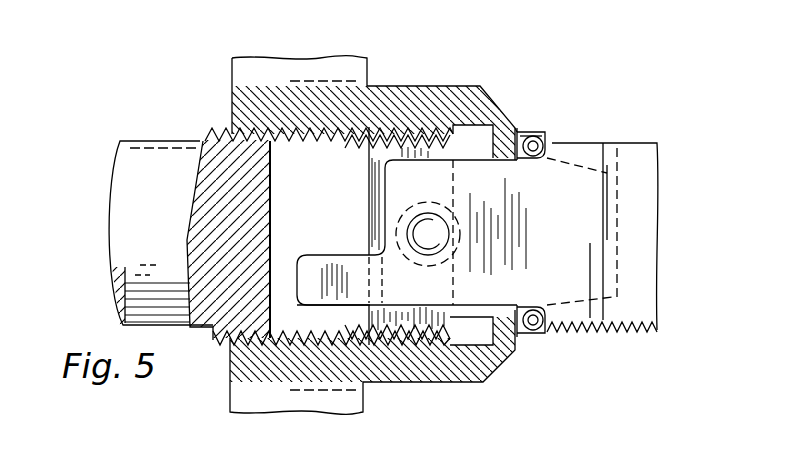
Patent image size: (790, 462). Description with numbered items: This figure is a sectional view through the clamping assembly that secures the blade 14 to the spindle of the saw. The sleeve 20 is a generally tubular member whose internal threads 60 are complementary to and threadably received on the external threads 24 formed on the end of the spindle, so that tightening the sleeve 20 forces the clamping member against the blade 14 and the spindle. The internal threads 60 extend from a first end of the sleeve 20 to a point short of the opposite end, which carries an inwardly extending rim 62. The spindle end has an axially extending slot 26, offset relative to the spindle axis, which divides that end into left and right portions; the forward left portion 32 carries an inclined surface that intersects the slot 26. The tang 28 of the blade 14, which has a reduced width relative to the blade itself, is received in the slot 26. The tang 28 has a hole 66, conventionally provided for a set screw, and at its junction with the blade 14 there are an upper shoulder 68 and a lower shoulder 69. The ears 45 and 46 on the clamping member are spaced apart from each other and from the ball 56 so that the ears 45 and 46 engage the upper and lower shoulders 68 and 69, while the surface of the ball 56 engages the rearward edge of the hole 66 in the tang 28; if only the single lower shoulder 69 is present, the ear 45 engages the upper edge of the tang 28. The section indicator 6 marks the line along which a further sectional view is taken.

The section line 6- 6 is at (427, 22).
The blade 14 is at (667, 159).
The sleeve 20 is at (506, 100).
The external threads 24 is at (260, 342).
The slot 26 is at (342, 176).
The tang 28 is at (330, 265).
The left portion 32 is at (356, 140).
The ear 45 is at (529, 134).
The ear 46 is at (522, 340).
The ball 56 is at (425, 214).
The internal threads 60 is at (245, 150).
The inwardly extending rim 62 is at (505, 123).
The hole 66 is at (448, 222).
The upper shoulder 68 is at (524, 160).
The lower shoulder 69 is at (530, 307).